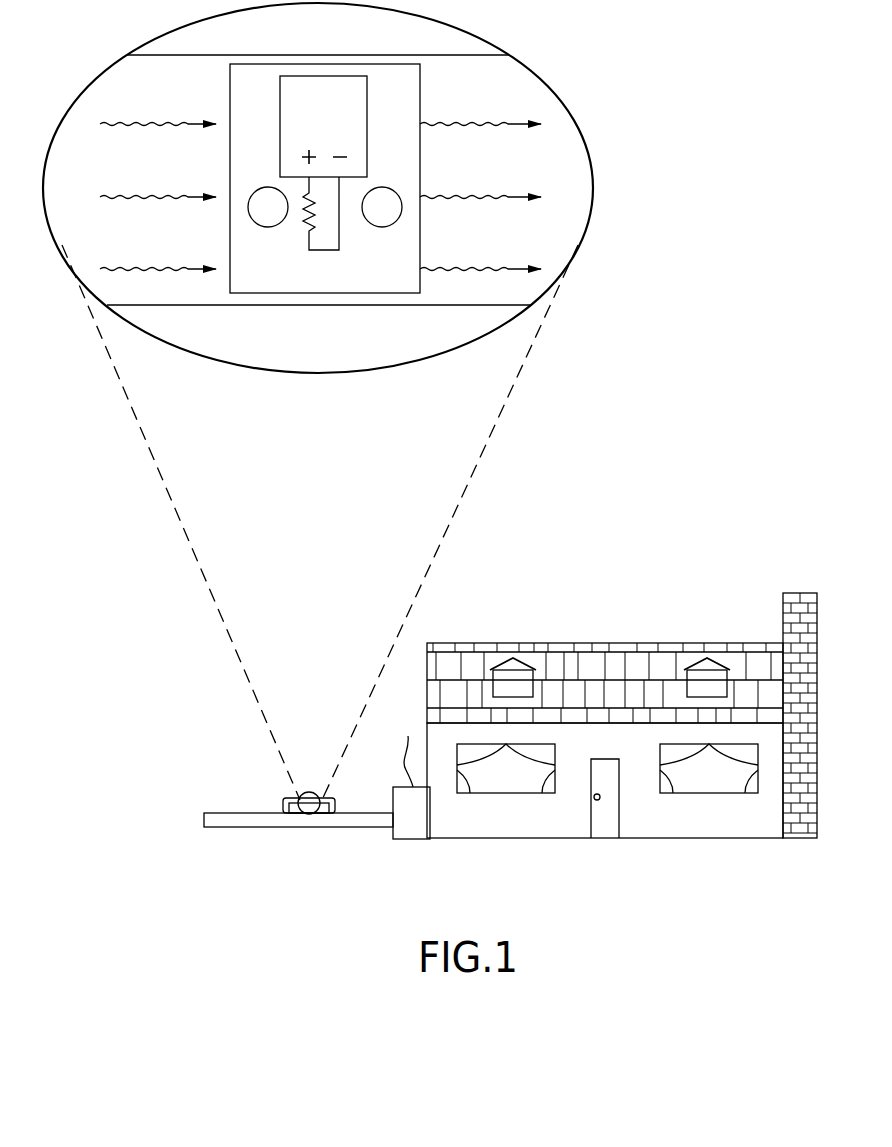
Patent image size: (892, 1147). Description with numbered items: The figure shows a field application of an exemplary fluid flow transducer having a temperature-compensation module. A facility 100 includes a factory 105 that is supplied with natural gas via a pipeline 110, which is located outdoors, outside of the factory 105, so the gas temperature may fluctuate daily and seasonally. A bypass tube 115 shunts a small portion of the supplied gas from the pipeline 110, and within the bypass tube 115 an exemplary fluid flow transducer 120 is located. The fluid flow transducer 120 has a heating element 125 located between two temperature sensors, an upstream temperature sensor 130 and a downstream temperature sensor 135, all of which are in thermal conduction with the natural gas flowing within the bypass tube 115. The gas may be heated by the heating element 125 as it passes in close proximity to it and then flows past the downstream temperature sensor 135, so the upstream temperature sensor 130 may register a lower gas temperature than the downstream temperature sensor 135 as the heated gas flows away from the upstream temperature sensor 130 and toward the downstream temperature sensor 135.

The facility 100 is at (683, 115).
The factory 105 is at (678, 643).
The pipeline 110 is at (257, 828).
The bypass tube 115 is at (285, 800).
The fluid flow transducer 120 is at (250, 293).
The heating element 125 is at (302, 200).
The upstream temperature sensor 130 is at (248, 209).
The downstream temperature sensor 135 is at (400, 200).